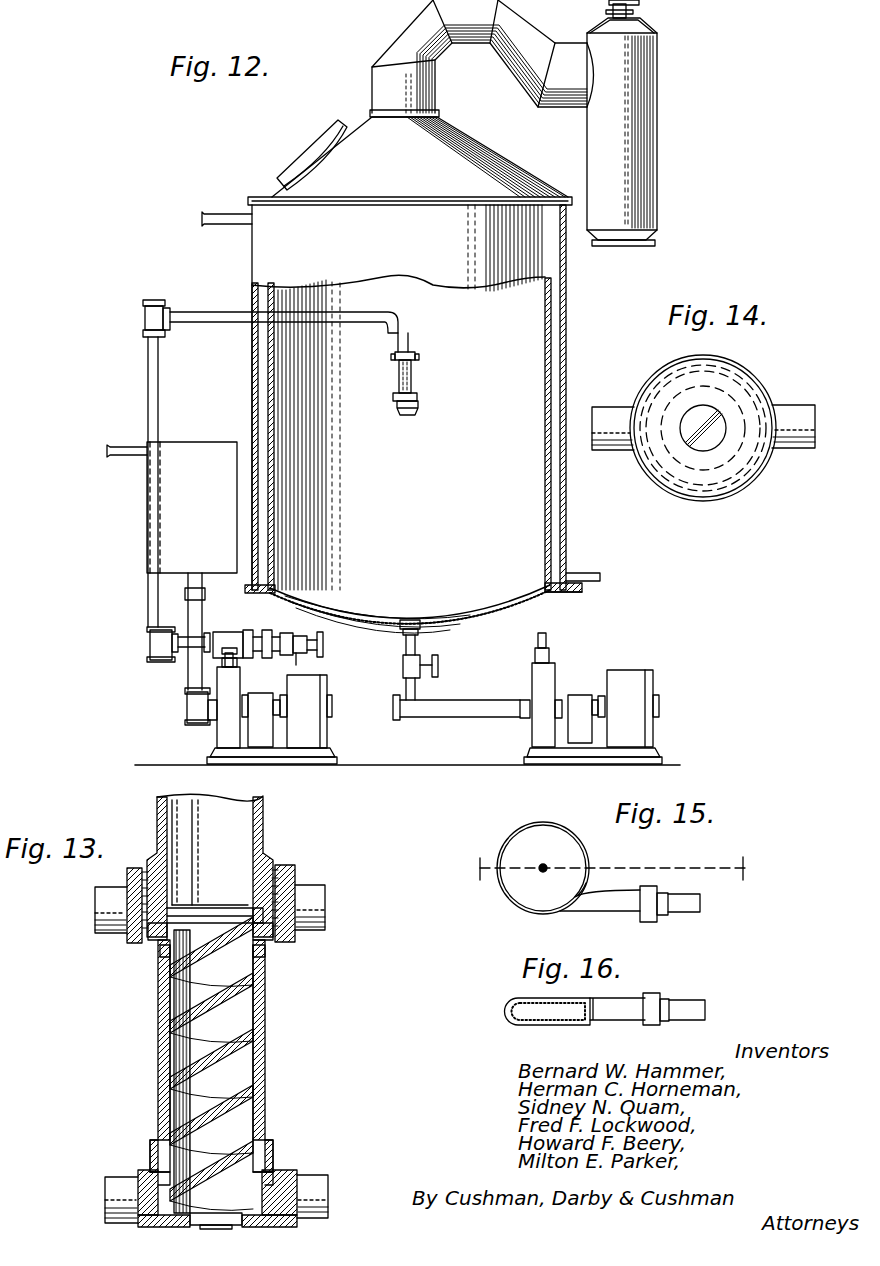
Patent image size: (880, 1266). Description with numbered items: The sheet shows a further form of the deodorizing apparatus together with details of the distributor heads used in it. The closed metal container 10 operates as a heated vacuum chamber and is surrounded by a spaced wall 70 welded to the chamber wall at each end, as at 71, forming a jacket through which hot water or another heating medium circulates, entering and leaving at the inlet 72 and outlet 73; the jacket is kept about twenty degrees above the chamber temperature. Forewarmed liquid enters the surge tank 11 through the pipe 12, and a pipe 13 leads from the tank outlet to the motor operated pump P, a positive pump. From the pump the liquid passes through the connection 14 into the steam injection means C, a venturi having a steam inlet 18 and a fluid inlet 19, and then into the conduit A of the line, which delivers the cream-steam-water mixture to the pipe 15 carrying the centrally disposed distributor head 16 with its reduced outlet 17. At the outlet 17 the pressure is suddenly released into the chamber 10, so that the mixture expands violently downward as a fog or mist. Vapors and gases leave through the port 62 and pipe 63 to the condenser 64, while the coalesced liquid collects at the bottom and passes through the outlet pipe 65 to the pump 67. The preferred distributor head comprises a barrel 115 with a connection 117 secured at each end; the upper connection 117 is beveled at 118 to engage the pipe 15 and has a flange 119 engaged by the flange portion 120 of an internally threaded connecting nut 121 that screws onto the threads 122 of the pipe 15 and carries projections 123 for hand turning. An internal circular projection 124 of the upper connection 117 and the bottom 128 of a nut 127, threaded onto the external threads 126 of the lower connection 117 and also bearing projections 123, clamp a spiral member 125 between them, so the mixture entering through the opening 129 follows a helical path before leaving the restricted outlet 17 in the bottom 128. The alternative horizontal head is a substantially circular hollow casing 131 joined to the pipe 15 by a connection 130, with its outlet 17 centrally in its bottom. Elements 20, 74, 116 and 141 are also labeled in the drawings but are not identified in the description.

In FIG. 12, the vacuum chamber 10 is at (398, 397).
In FIG. 12, the surge tank 11 is at (192, 507).
In FIG. 12, the pipe 12 is at (118, 447).
In FIG. 12, the pipe 13 is at (218, 322).
In FIG. 12, the pipe or connection 14 is at (208, 702).
In FIG. 12, the pipe or connection 15 is at (410, 340).
In FIG. 13, the pipe or connection 15 is at (159, 822).
In FIG. 15, the pipe or connection 15 is at (687, 898).
In FIG. 16, the pipe or connection 15 is at (706, 1010).
In FIG. 12, the distributor head 16 is at (414, 378).
In FIG. 13, the distributor head 16 is at (266, 1003).
In FIG. 12, the reduced outlet 17 is at (406, 402).
In FIG. 14, the reduced outlet 17 is at (703, 450).
In FIG. 13, the reduced outlet 17 is at (202, 1225).
In FIG. 15, the reduced outlet 17 is at (540, 871).
In FIG. 16, the reduced outlet 17 is at (546, 1024).
In FIG. 12, the steam inlet 18 is at (293, 648).
In FIG. 12, the fluid inlet 19 is at (292, 663).
In FIG. 12, the valve 20 is at (222, 660).
In FIG. 12, the port 62 is at (364, 128).
In FIG. 12, the pipe 63 is at (386, 50).
In FIG. 12, the condenser 64 is at (620, 145).
In FIG. 12, the outlet pipe 65 is at (404, 646).
In FIG. 12, the pump 67 is at (556, 690).
In FIG. 12, the spaced wall 70 is at (566, 367).
In FIG. 12, the welding 71 is at (582, 590).
In FIG. 12, the inlet 72 is at (596, 575).
In FIG. 12, the outlet 73 is at (216, 201).
In FIG. 12, the inner wall 74 is at (545, 393).
In FIG. 13, the barrel 115 is at (266, 1089).
In FIG. 13, the tube 116 is at (266, 958).
In FIG. 13, the connection 117 is at (160, 958).
In FIG. 13, the bevel 118 is at (170, 900).
In FIG. 13, the flange 119 is at (150, 942).
In FIG. 13, the flange portion 120 is at (296, 937).
In FIG. 13, the connecting nut 121 is at (298, 885).
In FIG. 13, the threads 122 is at (266, 870).
In FIG. 14, the projections 123 is at (802, 435).
In FIG. 13, the projections 123 is at (327, 900).
In FIG. 13, the internal circular projection 124 is at (262, 912).
In FIG. 13, the spiral member 125 is at (225, 1068).
In FIG. 13, the external threads 126 is at (285, 1175).
In FIG. 13, the nut 127 is at (318, 1196).
In FIG. 13, the bottom 128 is at (276, 1223).
In FIG. 13, the opening 129 is at (164, 994).
In FIG. 15, the connection 130 is at (661, 880).
In FIG. 16, the connection 130 is at (652, 998).
In FIG. 15, the hollow casing 131 is at (574, 852).
In FIG. 16, the hollow casing 131 is at (580, 1020).
In FIG. 12, the dished bottom 141 is at (496, 604).
In FIG. 12, the pipe or conduit A is at (158, 394).
In FIG. 12, the steam injection means C is at (237, 636).
In FIG. 12, the pump P is at (217, 737).